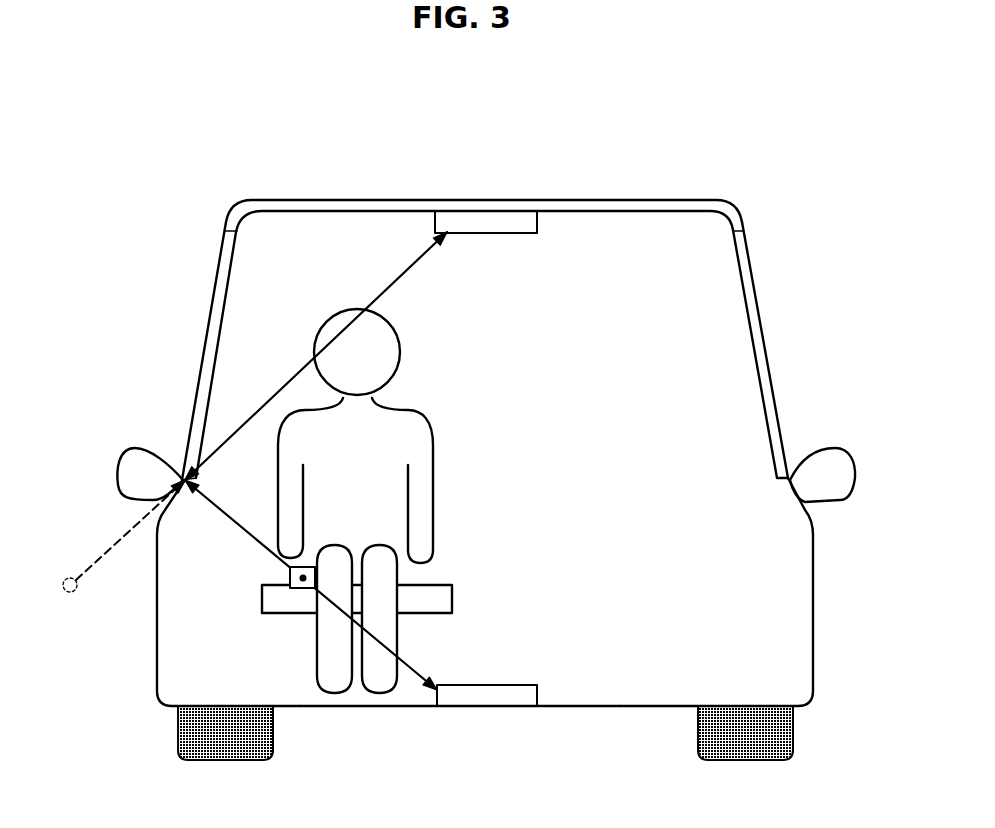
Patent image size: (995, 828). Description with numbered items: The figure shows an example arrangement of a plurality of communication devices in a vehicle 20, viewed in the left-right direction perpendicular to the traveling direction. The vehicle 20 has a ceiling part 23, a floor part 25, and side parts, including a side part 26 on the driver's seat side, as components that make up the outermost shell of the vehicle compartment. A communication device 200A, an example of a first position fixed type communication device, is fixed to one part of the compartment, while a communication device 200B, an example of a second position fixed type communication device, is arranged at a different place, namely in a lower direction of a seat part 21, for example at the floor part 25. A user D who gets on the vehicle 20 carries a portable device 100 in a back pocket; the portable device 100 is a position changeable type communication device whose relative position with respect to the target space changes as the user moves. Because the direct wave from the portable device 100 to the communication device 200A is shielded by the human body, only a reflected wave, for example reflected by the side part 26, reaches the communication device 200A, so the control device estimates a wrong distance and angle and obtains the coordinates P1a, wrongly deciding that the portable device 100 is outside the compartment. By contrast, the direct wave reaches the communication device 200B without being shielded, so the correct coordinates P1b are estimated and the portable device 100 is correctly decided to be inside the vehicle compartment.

The vehicle 20 is at (663, 186).
The communication device 200A is at (537, 218).
The communication device 200B is at (500, 685).
The ceiling part 23 is at (610, 211).
The seat part 21 is at (452, 598).
The floor part 25 is at (612, 706).
The side part 26 is at (157, 596).
The portable device 100 is at (290, 590).
The user D is at (433, 465).
The coordinates P1a is at (70, 577).
The coordinates P1b is at (303, 582).